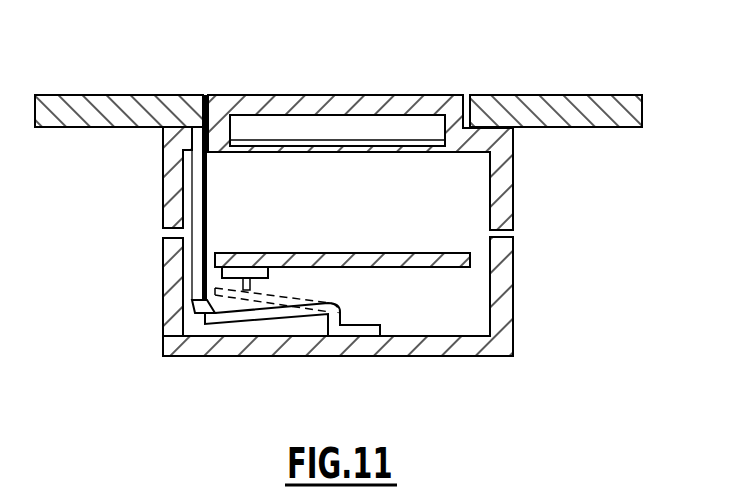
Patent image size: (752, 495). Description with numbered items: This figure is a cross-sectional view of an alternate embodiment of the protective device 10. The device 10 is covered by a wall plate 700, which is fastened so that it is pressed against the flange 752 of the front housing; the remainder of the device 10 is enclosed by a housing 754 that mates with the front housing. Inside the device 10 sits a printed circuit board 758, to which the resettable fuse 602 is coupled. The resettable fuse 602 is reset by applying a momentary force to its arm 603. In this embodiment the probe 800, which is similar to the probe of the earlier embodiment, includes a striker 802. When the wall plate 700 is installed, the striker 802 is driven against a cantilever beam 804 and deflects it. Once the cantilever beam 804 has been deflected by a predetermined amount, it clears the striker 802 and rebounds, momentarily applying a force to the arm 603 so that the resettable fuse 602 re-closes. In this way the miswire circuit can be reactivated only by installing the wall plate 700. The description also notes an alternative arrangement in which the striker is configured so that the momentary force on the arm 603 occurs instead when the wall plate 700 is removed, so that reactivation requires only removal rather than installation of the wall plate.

The protective device 10 is at (520, 72).
The wall plate 700 is at (91, 103).
The flange 752 is at (170, 152).
The housing 754 is at (169, 278).
The printed circuit board 758 is at (380, 262).
The probe 800 is at (207, 186).
The striker 802 is at (197, 305).
The cantilever beam 804 is at (290, 303).
The resettable fuse 602 is at (270, 269).
The arm 603 is at (247, 284).